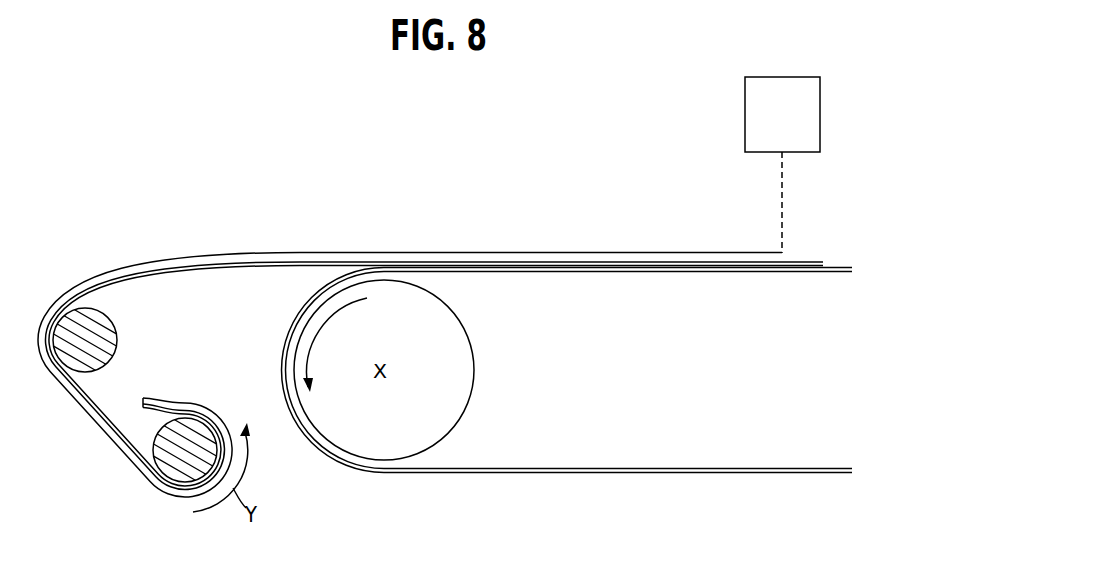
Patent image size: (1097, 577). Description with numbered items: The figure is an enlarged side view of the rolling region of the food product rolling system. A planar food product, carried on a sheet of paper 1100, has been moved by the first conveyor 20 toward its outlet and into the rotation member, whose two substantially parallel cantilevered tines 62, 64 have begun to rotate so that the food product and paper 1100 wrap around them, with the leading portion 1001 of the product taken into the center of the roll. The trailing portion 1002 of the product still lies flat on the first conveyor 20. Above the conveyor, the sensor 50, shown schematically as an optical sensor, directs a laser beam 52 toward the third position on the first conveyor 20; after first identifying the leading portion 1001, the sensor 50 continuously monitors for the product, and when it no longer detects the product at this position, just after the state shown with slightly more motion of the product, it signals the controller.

The first conveyor 20 is at (585, 474).
The sensor 50 is at (745, 113).
The laser beam 52 is at (782, 202).
The tine 62 is at (111, 329).
The tine 64 is at (160, 461).
The leading portion 1001 is at (146, 396).
The trailing portion 1002 is at (778, 260).
The sheet of paper 1100 is at (803, 273).